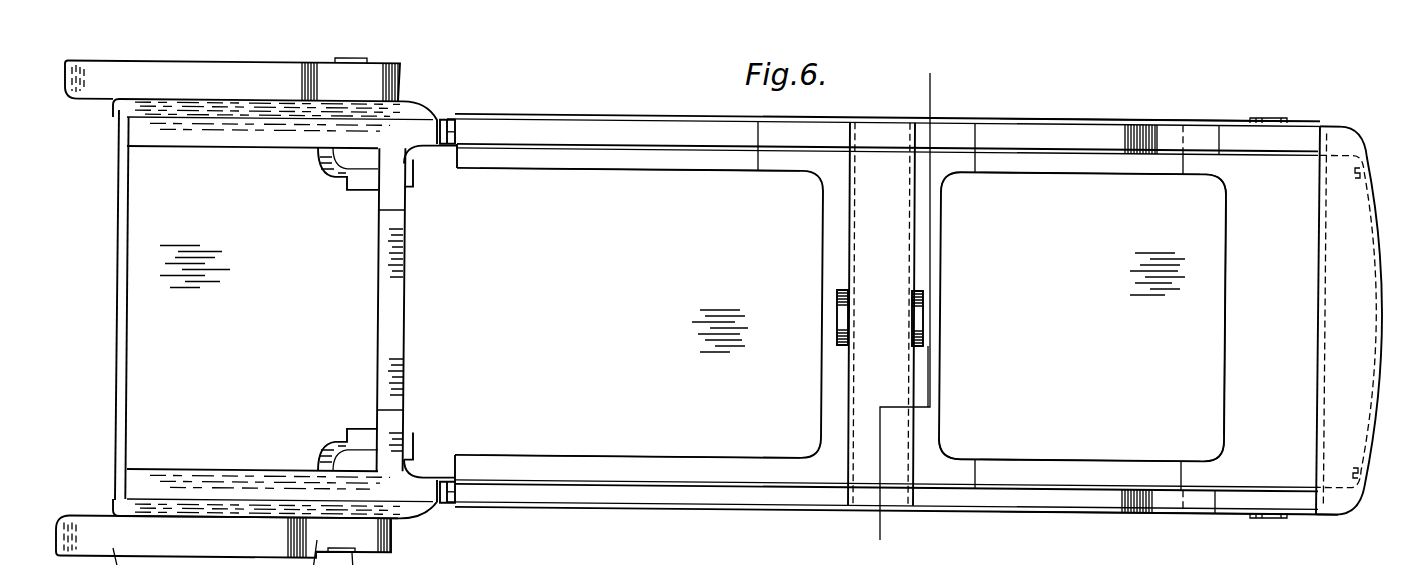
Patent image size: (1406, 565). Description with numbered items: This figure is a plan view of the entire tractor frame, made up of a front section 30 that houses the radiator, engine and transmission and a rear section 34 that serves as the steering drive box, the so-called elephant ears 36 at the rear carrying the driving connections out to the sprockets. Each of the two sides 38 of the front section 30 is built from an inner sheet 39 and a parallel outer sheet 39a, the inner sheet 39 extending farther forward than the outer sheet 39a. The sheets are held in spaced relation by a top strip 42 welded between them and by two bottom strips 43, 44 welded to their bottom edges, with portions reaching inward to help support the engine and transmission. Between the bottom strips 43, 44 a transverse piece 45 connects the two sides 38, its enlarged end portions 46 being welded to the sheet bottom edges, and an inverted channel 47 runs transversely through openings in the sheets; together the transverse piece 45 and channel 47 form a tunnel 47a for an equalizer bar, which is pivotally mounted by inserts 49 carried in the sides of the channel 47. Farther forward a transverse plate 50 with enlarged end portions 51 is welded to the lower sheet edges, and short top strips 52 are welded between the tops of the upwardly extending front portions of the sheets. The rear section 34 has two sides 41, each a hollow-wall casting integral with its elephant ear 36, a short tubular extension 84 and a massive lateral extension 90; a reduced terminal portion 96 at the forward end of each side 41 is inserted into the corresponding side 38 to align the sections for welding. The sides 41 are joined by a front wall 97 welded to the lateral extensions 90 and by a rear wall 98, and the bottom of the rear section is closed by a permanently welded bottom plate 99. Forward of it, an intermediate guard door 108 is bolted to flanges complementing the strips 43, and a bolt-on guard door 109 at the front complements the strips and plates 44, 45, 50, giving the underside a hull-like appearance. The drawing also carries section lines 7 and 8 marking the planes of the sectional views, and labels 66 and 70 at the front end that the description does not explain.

The front section 30 is at (1135, 122).
The rear section 34 is at (100, 255).
The elephant ears 36 is at (93, 97).
The sides 38 is at (1045, 117).
The inner sheet 39 is at (565, 148).
The outer sheet 39a is at (570, 117).
The sides 41 is at (204, 143).
The top strip 42 is at (682, 130).
The bottom strip 43 is at (673, 163).
The bottom strip 44 is at (1053, 170).
The transverse piece 45 is at (932, 415).
The enlarged end portions 46 is at (953, 170).
The inverted channel 47 is at (913, 388).
The tunnel 47a is at (918, 428).
The inserts 49 is at (838, 343).
The transverse plate 50 is at (1235, 325).
The enlarged end portions 51 is at (1195, 168).
The short top strips 52 is at (1235, 137).
The pin 66 is at (1280, 122).
The end cap 70 is at (1338, 345).
The short tubular extension 84 is at (333, 175).
The lateral extension 90 is at (397, 202).
The reduced terminal portion 96 is at (457, 120).
The front wall 97 is at (400, 310).
The rear wall 98 is at (118, 333).
The bottom plate 99 is at (240, 310).
The intermediate guard door 108 is at (580, 308).
The guard door 109 is at (1098, 304).
The section line 7- 7 is at (903, 88).
The section line 8- 8 is at (832, 317).